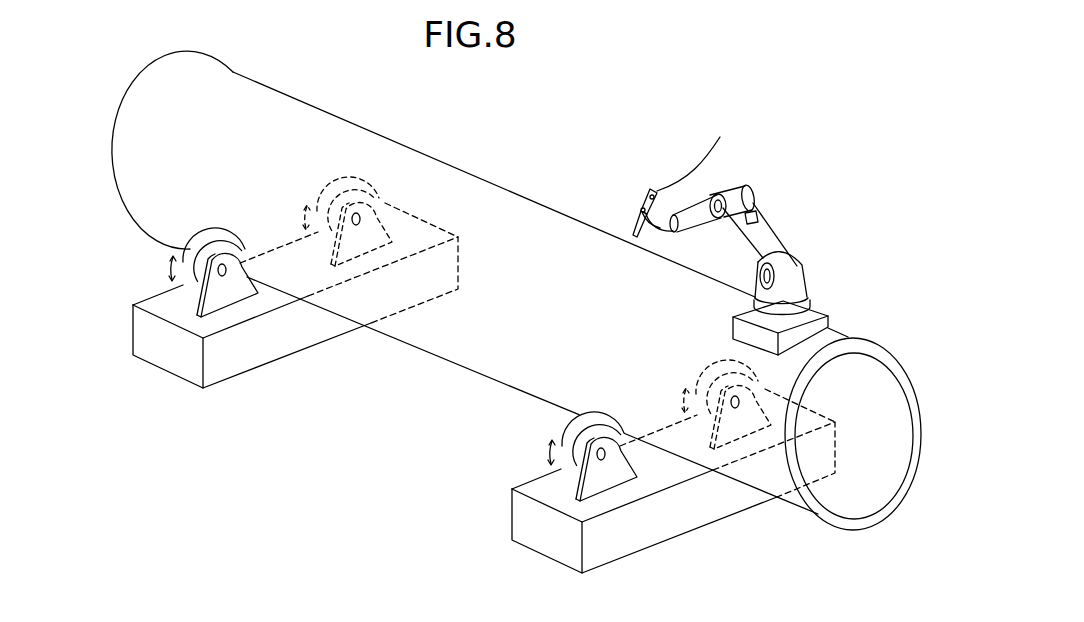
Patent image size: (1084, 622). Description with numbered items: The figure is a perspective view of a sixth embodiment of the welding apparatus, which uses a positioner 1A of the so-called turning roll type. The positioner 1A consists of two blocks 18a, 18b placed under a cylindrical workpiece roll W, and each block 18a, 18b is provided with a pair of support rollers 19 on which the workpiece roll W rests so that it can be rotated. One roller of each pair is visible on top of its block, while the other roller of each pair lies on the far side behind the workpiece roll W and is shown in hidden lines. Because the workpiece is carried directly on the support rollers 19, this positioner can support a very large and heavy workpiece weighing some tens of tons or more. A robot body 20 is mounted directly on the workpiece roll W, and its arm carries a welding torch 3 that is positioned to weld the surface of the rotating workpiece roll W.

The workpiece roll W is at (525, 218).
The positioner 1A is at (504, 523).
The welding torch 3 is at (635, 231).
The block 18a is at (623, 547).
The block 18b is at (243, 360).
The support roller 19 is at (183, 257).
The robot body 20 is at (781, 207).